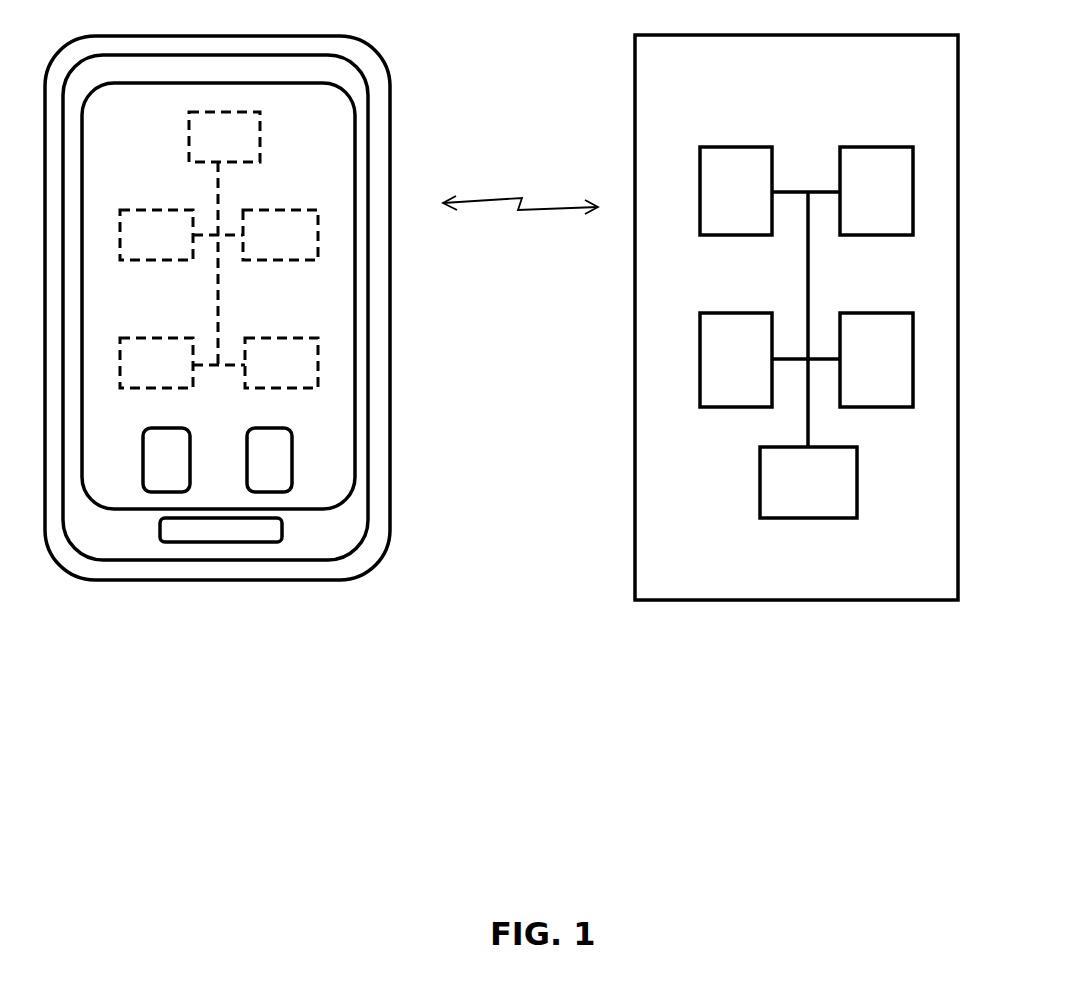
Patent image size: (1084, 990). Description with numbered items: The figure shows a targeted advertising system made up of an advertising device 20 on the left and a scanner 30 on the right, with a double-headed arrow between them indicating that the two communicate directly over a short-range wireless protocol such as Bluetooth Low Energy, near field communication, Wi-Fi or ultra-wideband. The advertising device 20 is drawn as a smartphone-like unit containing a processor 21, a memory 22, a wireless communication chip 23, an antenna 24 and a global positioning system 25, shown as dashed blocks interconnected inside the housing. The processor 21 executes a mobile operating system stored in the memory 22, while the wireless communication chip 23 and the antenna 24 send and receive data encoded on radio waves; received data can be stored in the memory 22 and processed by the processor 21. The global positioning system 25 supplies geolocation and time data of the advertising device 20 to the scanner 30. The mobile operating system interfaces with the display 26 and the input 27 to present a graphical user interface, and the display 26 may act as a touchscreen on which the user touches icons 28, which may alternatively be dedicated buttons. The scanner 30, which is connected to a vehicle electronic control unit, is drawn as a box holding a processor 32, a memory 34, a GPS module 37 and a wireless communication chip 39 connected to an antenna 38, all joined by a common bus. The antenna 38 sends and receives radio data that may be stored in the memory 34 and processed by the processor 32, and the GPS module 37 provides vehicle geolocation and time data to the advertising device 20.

The advertising device 20 is at (310, 580).
The processor 21 is at (122, 210).
The memory 22 is at (122, 338).
The wireless communication chip 23 is at (247, 338).
The antenna 24 is at (247, 210).
The global positioning system (GPS) 25 is at (258, 136).
The display 26 is at (135, 510).
The input 27 is at (222, 542).
The touch icons 28 is at (190, 458).
The scanner 30 is at (798, 600).
The processor 32 is at (882, 147).
The memory 34 is at (880, 313).
The GPS module 37 is at (738, 313).
The antenna 38 is at (740, 147).
The wireless communication chip 39 is at (795, 520).